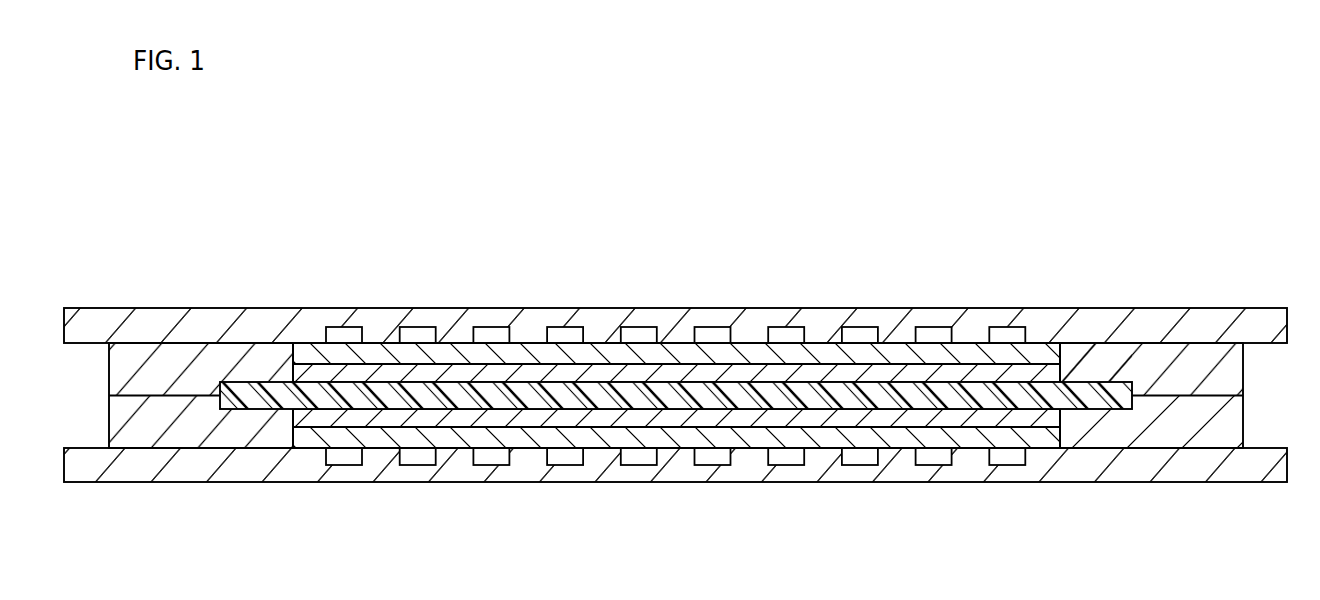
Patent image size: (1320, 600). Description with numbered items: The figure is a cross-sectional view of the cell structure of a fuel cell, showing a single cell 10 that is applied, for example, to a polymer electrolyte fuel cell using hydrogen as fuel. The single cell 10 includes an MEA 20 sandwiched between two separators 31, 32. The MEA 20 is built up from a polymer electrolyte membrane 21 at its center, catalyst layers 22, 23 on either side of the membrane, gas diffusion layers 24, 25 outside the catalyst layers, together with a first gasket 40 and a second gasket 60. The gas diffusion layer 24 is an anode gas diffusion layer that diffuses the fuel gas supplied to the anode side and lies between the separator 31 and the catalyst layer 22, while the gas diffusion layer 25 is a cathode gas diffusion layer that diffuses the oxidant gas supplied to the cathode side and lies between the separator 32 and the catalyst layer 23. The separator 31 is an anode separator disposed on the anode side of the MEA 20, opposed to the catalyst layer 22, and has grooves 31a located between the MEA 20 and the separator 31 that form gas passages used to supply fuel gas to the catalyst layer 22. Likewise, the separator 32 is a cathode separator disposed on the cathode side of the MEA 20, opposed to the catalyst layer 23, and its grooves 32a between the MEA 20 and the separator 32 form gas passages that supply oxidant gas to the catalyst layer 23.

The single cell 10 is at (100, 204).
The MEA 20 is at (1177, 217).
The polymer electrolyte membrane 21 is at (961, 397).
The catalyst layer 22 is at (1003, 417).
The catalyst layer 23 is at (911, 372).
The gas diffusion layer 24 is at (1046, 445).
The gas diffusion layer 25 is at (865, 355).
The separator 31 is at (368, 473).
The grooves 31a is at (420, 462).
The separator 32 is at (372, 322).
The grooves 32a is at (418, 332).
The first gasket 40 is at (1162, 416).
The second gasket 60 is at (1113, 362).